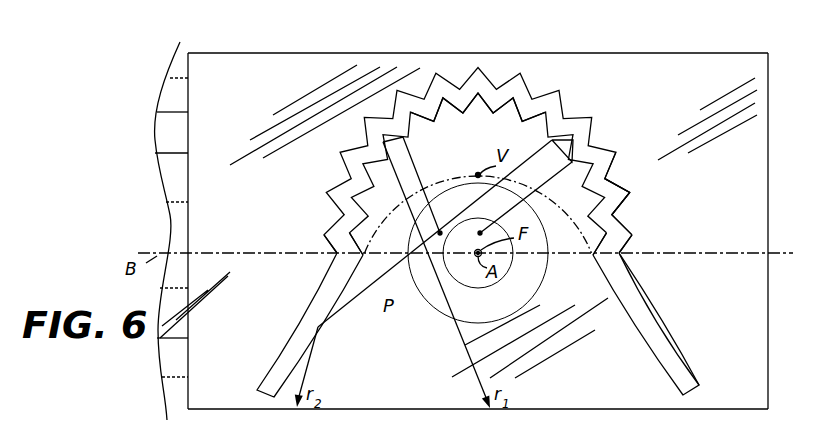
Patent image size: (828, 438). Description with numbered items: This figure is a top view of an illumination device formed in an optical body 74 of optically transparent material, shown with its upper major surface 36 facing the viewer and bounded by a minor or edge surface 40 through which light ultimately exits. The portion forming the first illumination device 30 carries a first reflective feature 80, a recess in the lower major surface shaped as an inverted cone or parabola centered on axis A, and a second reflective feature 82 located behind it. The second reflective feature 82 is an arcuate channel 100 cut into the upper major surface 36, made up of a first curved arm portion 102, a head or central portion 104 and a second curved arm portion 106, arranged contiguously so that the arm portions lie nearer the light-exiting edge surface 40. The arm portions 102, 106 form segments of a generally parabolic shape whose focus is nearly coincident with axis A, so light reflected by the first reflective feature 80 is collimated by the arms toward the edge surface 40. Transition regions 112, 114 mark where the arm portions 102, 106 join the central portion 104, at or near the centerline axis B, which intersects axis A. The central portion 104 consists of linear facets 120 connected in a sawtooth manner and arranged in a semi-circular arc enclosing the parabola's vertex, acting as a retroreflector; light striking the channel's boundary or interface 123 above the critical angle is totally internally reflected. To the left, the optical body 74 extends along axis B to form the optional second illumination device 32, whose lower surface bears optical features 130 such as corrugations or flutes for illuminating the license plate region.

The first illumination device 30 is at (684, 49).
The second illumination device 32 is at (192, 49).
The upper major surface 36 is at (278, 82).
The minor or edge surface 40 is at (655, 410).
The optical body 74 is at (753, 163).
The first reflective feature 80 is at (430, 320).
The second reflective feature 82 is at (538, 78).
The arcuate channel 100 is at (585, 128).
The first curved arm portion 102 is at (289, 366).
The head or central portion 104 is at (630, 183).
The second curved arm portion 106 is at (650, 333).
The transition region 112 is at (337, 258).
The transition region 114 is at (623, 261).
The facets or segments 120 is at (453, 119).
The boundary or interface 123 is at (620, 222).
The optical features 130 is at (158, 168).